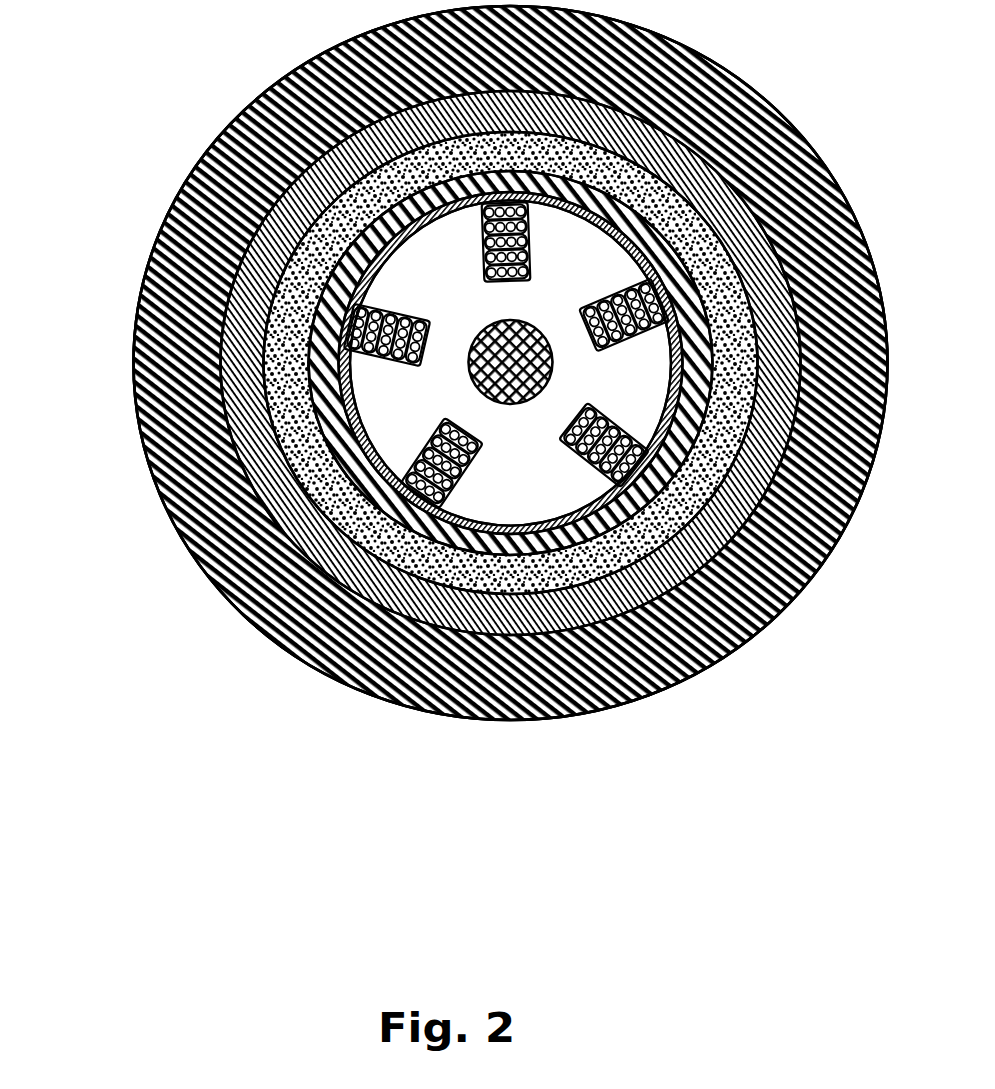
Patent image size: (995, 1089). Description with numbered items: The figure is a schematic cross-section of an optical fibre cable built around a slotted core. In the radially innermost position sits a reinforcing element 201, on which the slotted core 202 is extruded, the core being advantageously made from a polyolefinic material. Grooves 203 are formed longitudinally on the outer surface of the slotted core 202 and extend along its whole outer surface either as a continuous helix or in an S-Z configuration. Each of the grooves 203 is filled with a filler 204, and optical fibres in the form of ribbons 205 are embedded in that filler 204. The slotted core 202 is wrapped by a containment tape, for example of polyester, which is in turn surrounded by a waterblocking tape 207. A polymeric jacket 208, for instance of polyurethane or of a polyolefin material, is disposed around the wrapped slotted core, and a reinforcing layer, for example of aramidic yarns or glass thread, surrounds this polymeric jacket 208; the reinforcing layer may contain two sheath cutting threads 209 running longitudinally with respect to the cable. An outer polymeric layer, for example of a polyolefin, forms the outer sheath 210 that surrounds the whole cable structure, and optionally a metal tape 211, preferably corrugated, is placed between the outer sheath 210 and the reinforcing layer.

The reinforcing element 201 is at (472, 388).
The slotted core 202 is at (390, 388).
The grooves 203 is at (346, 462).
The filler 204 is at (440, 478).
The ribbons 205 is at (483, 452).
The waterblocking tape 207 is at (300, 297).
The polymeric jacket 208 is at (297, 215).
The sheath cutting threads 209 is at (302, 168).
The outer sheath 210 is at (640, 660).
The metal tape 211 is at (707, 643).